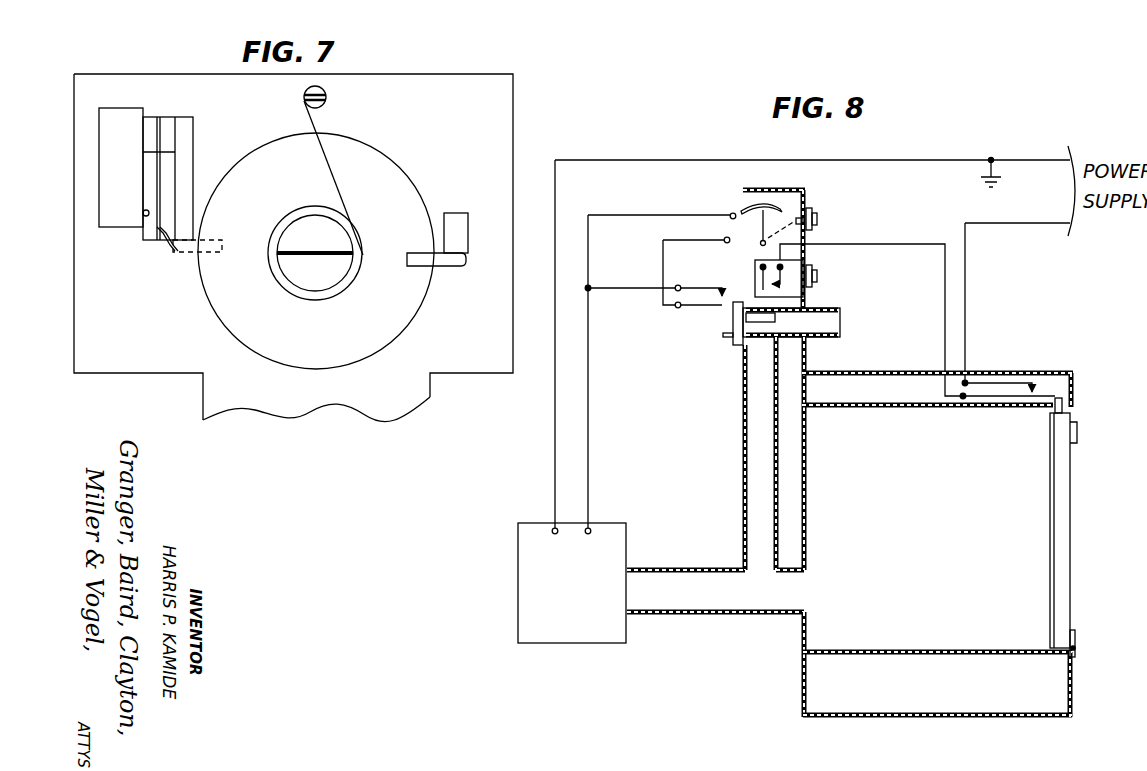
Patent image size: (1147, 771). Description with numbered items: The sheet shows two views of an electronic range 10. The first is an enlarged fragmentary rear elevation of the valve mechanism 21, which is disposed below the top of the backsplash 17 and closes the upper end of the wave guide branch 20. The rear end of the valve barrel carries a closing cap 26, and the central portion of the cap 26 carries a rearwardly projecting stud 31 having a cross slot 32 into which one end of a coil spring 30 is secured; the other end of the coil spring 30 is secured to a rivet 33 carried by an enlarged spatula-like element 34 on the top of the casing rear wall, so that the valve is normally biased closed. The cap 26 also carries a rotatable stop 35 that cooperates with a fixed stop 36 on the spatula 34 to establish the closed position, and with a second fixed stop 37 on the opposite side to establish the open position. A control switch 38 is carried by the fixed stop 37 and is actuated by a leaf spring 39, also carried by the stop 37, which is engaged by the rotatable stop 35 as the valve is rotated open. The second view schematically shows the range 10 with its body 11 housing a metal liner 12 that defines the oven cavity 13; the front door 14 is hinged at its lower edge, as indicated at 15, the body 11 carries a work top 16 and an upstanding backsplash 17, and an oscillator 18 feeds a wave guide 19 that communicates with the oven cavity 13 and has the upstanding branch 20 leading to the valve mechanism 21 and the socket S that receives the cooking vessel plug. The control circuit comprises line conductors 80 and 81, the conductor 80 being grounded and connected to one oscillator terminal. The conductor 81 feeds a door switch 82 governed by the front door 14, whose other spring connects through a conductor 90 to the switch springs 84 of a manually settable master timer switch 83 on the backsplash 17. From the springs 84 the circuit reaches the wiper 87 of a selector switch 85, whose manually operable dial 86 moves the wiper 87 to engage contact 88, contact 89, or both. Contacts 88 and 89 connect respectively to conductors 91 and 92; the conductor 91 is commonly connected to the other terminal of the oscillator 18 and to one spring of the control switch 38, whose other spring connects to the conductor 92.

In FIG. 8, the electronic range 10 is at (926, 521).
In FIG. 8, the body 11 is at (790, 640).
In FIG. 8, the metal liner 12 is at (869, 651).
In FIG. 8, the oven cavity 13 is at (935, 535).
In FIG. 8, the front door 14 is at (1065, 530).
In FIG. 8, the hinge 15 is at (1076, 649).
In FIG. 8, the work top 16 is at (862, 372).
In FIG. 8, the backsplash 17 is at (788, 190).
In FIG. 8, the oscillator 18 is at (553, 644).
In FIG. 8, the wave guide 19 is at (672, 613).
In FIG. 7, the wave guide branch 20 is at (437, 394).
In FIG. 8, the wave guide branch 20 is at (742, 451).
In FIG. 8, the valve mechanism 21 is at (735, 340).
In FIG. 7, the closing cap 26 is at (233, 332).
In FIG. 7, the coil spring 30 is at (358, 142).
In FIG. 7, the stud 31 is at (285, 238).
In FIG. 7, the cross slot 32 is at (329, 251).
In FIG. 7, the rivet 33 is at (325, 94).
In FIG. 7, the spatula-like element 34 is at (507, 106).
In FIG. 7, the rotatable stop 35 is at (452, 263).
In FIG. 7, the fixed stop 36 is at (458, 233).
In FIG. 7, the fixed stop 37 is at (185, 164).
In FIG. 7, the control switch 38 is at (125, 226).
In FIG. 8, the control switch 38 is at (700, 309).
In FIG. 7, the leaf spring 39 is at (166, 255).
In FIG. 8, the line conductor 80 is at (1040, 160).
In FIG. 8, the line conductor 81 is at (1038, 224).
In FIG. 8, the door switch 82 is at (1000, 394).
In FIG. 8, the master timer switch 83 is at (815, 276).
In FIG. 8, the switch springs 84 is at (755, 278).
In FIG. 8, the selector switch 85 is at (820, 223).
In FIG. 8, the manually operable dial 86 is at (811, 213).
In FIG. 8, the wiper 87 is at (745, 207).
In FIG. 8, the contact 88 is at (731, 221).
In FIG. 8, the contact 89 is at (725, 245).
In FIG. 8, the conductor 90 is at (876, 245).
In FIG. 8, the conductor 91 is at (634, 213).
In FIG. 8, the conductor 92 is at (662, 256).
In FIG. 8, the composite socket S is at (789, 275).